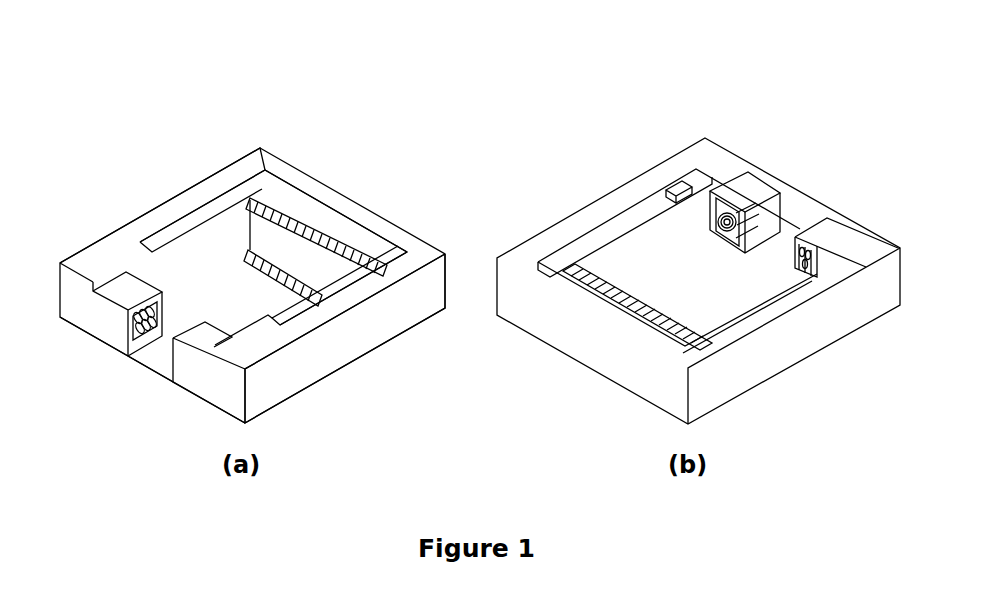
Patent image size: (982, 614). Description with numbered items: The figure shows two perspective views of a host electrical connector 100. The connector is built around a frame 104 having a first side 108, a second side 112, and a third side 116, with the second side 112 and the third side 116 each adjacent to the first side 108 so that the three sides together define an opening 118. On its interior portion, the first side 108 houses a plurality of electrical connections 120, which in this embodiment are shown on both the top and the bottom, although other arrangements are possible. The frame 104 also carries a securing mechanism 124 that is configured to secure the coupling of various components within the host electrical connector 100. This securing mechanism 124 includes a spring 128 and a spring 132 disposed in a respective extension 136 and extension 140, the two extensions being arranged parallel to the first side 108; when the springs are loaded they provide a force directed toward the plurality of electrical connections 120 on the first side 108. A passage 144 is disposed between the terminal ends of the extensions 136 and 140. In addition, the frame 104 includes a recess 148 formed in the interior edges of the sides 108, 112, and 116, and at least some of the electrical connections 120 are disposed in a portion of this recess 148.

The host electrical connector 100 is at (170, 38).
The frame 104 is at (207, 150).
The first side 108 is at (358, 206).
The second side 112 is at (115, 232).
The third side 116 is at (332, 371).
The electrical connections 120 is at (252, 197).
The securing mechanism 124 is at (89, 383).
The spring 128 is at (156, 313).
The spring 132 is at (770, 207).
The extension 136 is at (110, 333).
The extension 140 is at (188, 373).
The passage 144 is at (154, 366).
The recess 148 is at (625, 222).
The opening 118 is at (738, 262).